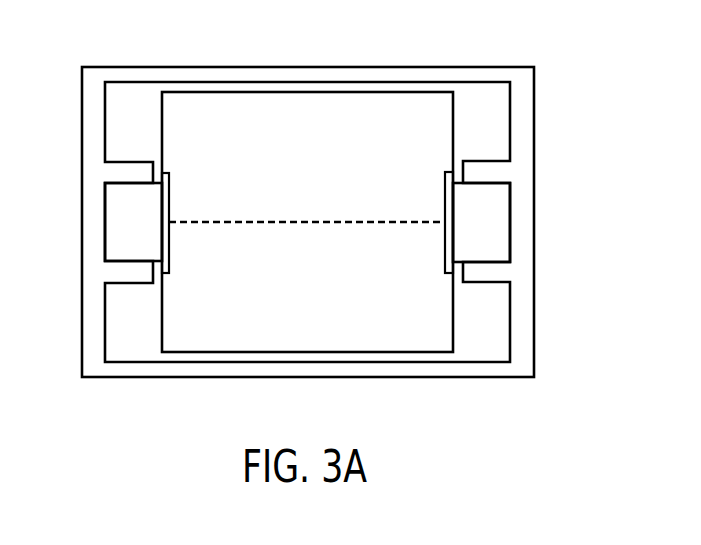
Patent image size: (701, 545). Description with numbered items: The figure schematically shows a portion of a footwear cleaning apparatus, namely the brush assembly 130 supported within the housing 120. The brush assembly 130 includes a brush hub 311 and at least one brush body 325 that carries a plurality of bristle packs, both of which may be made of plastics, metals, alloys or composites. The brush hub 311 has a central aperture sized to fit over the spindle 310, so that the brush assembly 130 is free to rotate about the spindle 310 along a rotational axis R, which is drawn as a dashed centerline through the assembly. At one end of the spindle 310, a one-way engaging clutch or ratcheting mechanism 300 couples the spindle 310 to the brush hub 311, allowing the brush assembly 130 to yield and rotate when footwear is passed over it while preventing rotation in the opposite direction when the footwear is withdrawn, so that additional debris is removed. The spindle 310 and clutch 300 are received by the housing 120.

The housing 120 is at (463, 67).
The brush assembly 130 is at (252, 120).
The one-way engaging clutch or ratcheting mechanism 300 is at (498, 222).
The spindle 310 is at (115, 212).
The brush hub 311 is at (453, 180).
The brush body 325 is at (420, 353).
The rotational axis R is at (315, 222).